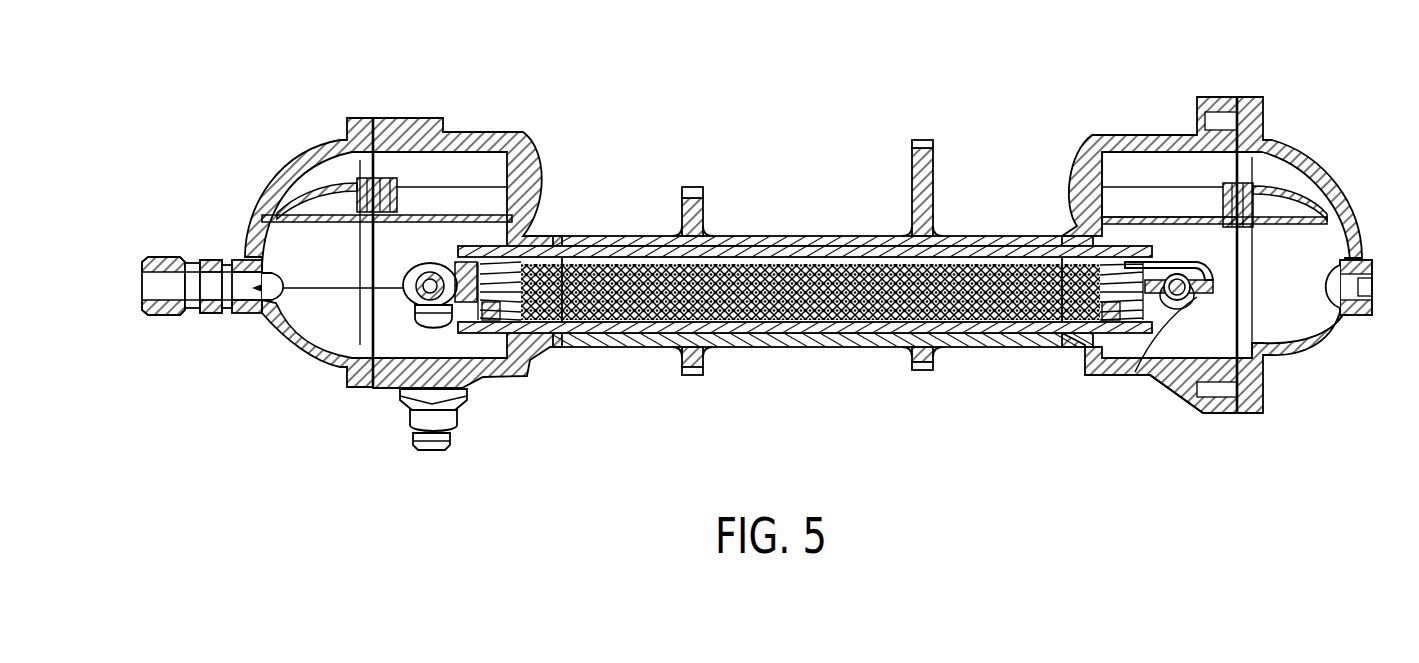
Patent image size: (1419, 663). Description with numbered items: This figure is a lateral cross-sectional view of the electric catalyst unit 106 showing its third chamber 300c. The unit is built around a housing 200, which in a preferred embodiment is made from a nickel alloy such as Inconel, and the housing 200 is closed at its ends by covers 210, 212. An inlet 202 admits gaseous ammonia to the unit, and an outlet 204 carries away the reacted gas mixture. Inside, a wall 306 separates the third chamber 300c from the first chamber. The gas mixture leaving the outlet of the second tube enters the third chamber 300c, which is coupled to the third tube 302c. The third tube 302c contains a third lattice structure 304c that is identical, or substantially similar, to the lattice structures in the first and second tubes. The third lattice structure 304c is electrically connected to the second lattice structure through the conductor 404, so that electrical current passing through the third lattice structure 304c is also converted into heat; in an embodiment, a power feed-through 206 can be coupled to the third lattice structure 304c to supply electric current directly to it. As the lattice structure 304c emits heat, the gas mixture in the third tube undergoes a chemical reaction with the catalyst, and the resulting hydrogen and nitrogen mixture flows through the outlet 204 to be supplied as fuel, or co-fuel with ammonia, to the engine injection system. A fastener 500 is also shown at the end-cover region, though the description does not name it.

The electric catalyst unit 106 is at (960, 112).
The housing 200 is at (823, 284).
The inlet 202 is at (1362, 262).
The outlet 204 is at (165, 257).
The power feed-through 206 is at (448, 450).
The cover 210 is at (821, 254).
The cover 212 is at (310, 360).
The third chamber 300c is at (1228, 408).
The third tube 302c is at (806, 348).
The third lattice structure 304c is at (730, 348).
The wall 306 is at (1165, 215).
The conductor 404 is at (1127, 377).
The fastener 500 is at (1190, 300).